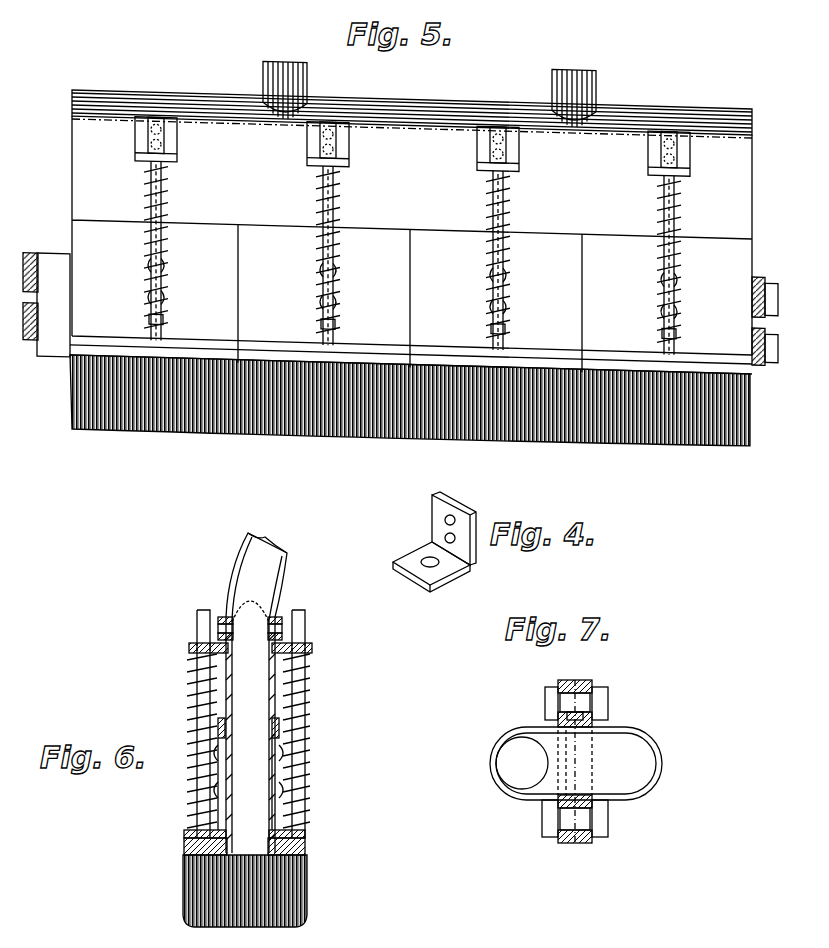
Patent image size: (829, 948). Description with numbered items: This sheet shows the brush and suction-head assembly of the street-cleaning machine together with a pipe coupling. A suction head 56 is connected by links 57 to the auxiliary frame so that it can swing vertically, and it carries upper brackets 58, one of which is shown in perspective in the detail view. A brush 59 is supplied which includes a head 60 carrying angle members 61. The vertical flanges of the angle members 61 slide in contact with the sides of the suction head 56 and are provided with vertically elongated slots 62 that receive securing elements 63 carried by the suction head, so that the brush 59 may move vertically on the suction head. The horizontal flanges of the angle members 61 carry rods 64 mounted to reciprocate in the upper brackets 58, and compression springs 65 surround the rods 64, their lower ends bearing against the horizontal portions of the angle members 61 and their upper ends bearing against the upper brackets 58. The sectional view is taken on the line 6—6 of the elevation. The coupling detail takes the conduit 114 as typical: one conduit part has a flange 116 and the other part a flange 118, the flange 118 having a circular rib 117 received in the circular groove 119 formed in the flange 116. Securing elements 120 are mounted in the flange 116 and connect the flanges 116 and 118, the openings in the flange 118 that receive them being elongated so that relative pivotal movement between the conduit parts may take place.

In FIG. 5, the section line 6— 6 is at (283, 54).
In FIG. 5, the suction head 56 is at (172, 107).
In FIG. 6, the suction head 56 is at (250, 663).
In FIG. 5, the link 57 is at (35, 331).
In FIG. 5, the upper bracket 58 is at (312, 137).
In FIG. 6, the upper bracket 58 is at (190, 646).
In FIG. 4, the upper bracket 58 is at (437, 526).
In FIG. 5, the brush 59 is at (660, 420).
In FIG. 6, the brush 59 is at (296, 912).
In FIG. 5, the head 60 is at (290, 345).
In FIG. 6, the head 60 is at (190, 843).
In FIG. 5, the angle member 61 is at (250, 243).
In FIG. 6, the angle member 61 is at (190, 835).
In FIG. 5, the vertically elongated slot 62 is at (320, 313).
In FIG. 6, the vertically elongated slot 62 is at (222, 733).
In FIG. 5, the securing element 63 is at (320, 293).
In FIG. 6, the securing element 63 is at (218, 795).
In FIG. 5, the rod 64 is at (320, 168).
In FIG. 6, the rod 64 is at (201, 624).
In FIG. 5, the compression spring 65 is at (318, 180).
In FIG. 6, the compression spring 65 is at (196, 700).
In FIG. 7, the conduit 114 is at (650, 742).
In FIG. 7, the flange 116 is at (567, 692).
In FIG. 7, the circular rib 117 is at (582, 720).
In FIG. 7, the flange 118 is at (588, 684).
In FIG. 7, the circular groove 119 is at (562, 722).
In FIG. 7, the securing element 120 is at (565, 700).